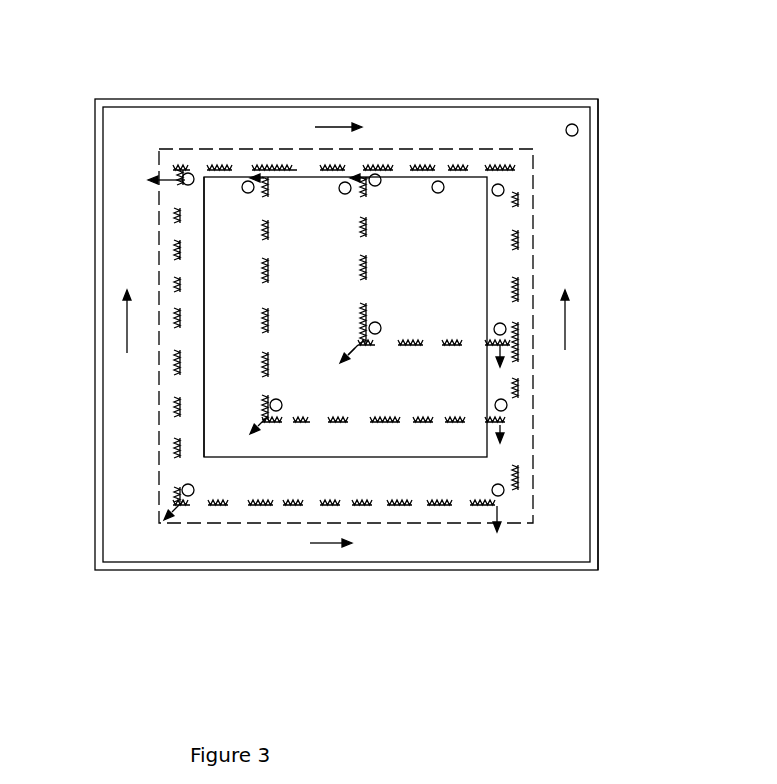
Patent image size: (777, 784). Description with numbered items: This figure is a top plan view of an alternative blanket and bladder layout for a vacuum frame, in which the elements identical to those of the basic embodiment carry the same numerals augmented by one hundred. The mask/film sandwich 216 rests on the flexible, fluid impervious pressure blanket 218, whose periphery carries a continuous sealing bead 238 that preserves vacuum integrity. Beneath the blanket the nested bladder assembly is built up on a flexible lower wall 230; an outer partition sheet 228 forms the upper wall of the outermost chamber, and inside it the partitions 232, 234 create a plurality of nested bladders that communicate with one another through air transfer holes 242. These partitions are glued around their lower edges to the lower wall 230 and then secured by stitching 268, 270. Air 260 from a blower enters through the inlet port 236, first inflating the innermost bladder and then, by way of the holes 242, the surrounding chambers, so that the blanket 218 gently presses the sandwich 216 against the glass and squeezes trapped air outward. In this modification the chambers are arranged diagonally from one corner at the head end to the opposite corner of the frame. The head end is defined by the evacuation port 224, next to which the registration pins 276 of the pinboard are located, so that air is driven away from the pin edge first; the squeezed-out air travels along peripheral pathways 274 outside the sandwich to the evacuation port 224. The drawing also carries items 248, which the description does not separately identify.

The mask/film sandwich 216 is at (204, 214).
The pressure blanket 218 is at (598, 432).
The evacuation port 224 is at (576, 126).
The outer partition sheet 228 is at (192, 464).
The lower wall 230 is at (533, 222).
The partition 232 is at (477, 267).
The partition 234 is at (290, 328).
The inlet port 236 is at (498, 184).
The sealing bead 238 is at (598, 176).
The air transfer holes 242 is at (375, 186).
The via connection 248 is at (188, 496).
The air 260 is at (352, 352).
The stitching 268 is at (520, 472).
The stitching 270 is at (280, 165).
The peripheral pathways 274 is at (330, 120).
The registration pins 276 is at (248, 181).